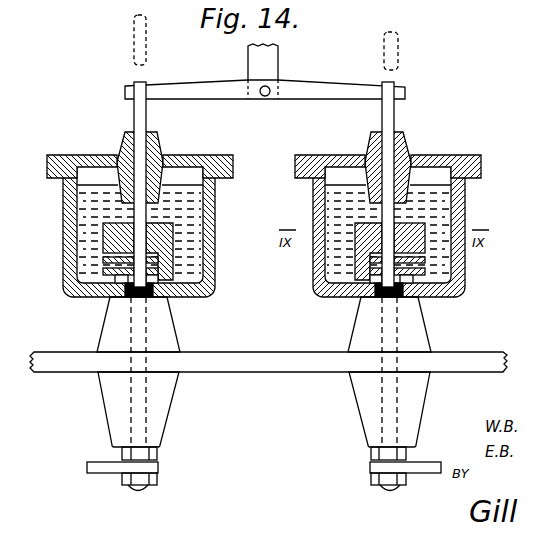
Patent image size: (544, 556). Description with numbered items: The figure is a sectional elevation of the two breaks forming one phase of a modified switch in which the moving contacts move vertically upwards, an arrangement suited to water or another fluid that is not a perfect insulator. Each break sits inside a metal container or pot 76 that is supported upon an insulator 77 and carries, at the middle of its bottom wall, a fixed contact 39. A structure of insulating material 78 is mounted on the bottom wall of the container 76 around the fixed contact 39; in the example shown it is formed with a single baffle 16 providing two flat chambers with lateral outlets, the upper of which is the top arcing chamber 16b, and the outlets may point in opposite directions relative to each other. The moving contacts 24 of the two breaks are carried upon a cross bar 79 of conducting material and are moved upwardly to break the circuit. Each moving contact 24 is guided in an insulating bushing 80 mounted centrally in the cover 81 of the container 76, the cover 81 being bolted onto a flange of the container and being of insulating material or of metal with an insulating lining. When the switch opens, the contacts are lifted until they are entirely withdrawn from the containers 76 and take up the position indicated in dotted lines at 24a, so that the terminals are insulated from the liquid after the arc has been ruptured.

The baffle 16 is at (63, 262).
The top arcing chamber 16b is at (352, 257).
The moving contact pin 24 is at (141, 156).
The raised position of moving contact 24a is at (134, 50).
The fixed contact 39 is at (92, 295).
The metal container 76 is at (63, 200).
The insulator 77 is at (157, 333).
The structure of insulating material 78 is at (163, 238).
The cross bar 79 is at (351, 90).
The insulating bushing 80 is at (124, 135).
The cover 81 is at (207, 157).